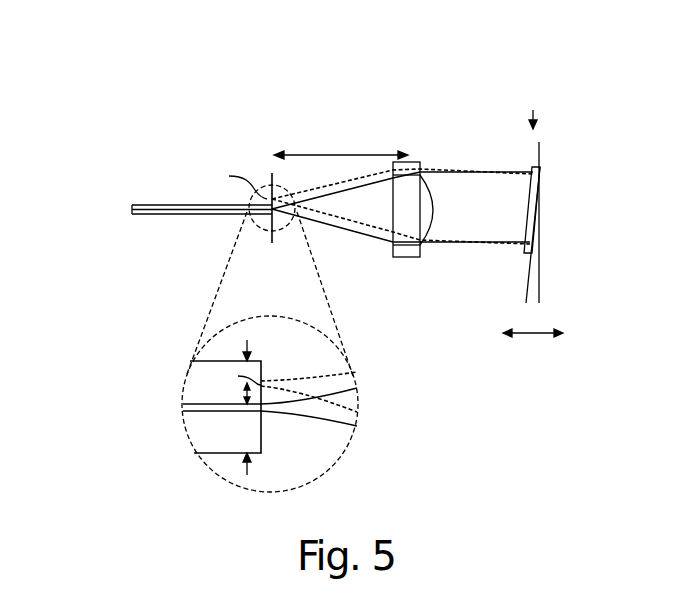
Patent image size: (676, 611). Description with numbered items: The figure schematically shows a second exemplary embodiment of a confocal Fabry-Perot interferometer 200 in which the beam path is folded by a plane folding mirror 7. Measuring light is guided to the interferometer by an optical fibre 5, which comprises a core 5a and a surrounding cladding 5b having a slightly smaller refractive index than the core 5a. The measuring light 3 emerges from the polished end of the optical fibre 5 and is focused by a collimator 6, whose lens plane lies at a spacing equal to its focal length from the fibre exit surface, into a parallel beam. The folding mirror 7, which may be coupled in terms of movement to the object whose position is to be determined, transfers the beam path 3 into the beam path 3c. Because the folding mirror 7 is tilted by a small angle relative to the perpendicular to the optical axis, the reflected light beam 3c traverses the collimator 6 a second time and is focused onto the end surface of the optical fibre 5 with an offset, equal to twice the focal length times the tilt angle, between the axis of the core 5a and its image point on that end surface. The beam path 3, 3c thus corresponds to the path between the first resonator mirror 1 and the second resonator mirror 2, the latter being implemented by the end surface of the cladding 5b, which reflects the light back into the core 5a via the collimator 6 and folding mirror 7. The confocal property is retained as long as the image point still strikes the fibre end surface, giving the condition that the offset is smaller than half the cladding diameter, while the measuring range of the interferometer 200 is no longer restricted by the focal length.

The confocal Fabry-Perot interferometer 200 is at (400, 101).
The optical fibre 5 is at (152, 205).
The core 5a is at (203, 406).
The cladding 5b is at (212, 453).
The measuring light beam 3 is at (338, 228).
The reflected light beam 3c is at (437, 172).
The second resonator mirror 2 is at (261, 375).
The first resonator mirror 1 is at (263, 412).
The collimator 6 is at (408, 248).
The folding mirror 7 is at (532, 169).